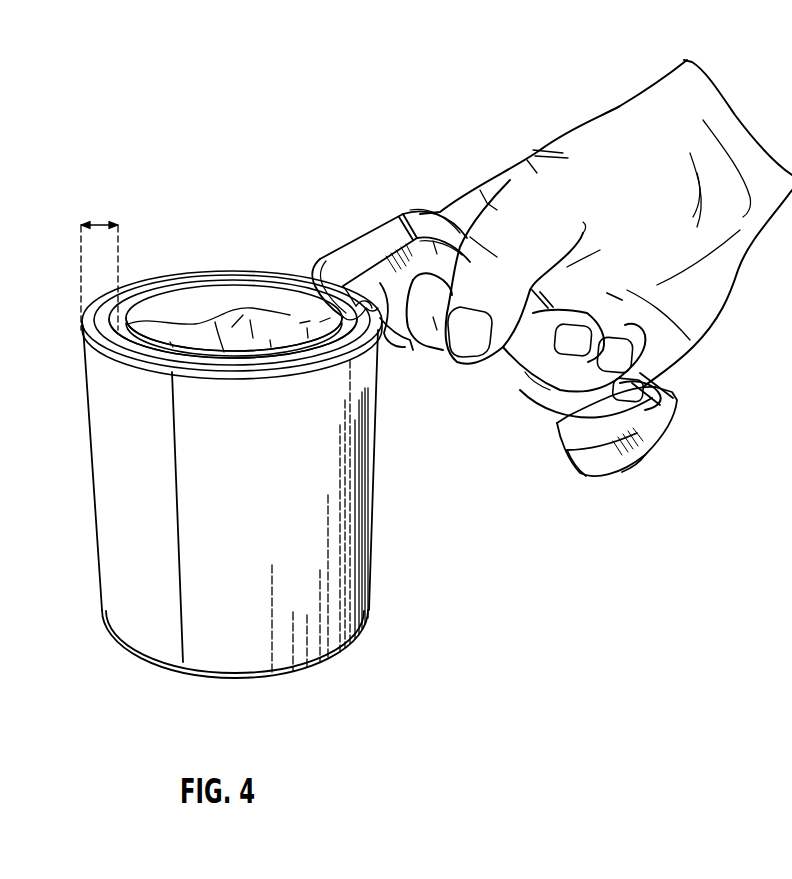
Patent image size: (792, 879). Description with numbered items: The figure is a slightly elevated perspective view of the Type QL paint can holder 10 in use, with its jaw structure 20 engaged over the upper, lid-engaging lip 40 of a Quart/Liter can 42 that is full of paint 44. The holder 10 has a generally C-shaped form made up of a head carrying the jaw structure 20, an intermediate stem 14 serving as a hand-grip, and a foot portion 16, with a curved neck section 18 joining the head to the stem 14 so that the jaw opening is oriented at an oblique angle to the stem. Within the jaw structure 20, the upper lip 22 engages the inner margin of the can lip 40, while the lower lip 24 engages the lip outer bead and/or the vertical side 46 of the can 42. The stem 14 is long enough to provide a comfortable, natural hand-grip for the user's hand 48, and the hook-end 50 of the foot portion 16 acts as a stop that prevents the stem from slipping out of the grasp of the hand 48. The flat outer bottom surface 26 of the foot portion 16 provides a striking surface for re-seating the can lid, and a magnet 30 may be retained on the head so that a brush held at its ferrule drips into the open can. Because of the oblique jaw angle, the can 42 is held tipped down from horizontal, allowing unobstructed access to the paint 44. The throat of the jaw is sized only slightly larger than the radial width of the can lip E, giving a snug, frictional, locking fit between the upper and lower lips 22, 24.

The paint can holder 10 is at (516, 421).
The stem 14 is at (547, 292).
The foot portion 16 is at (604, 492).
The curved neck section 18 is at (437, 251).
The jaw structure 20 is at (351, 295).
The upper lip 22 is at (327, 307).
The lower lip 24 is at (388, 333).
The outer bottom surface 26 is at (636, 461).
The magnet 30 is at (377, 243).
The lid-engaging lip 40 is at (194, 277).
The can 42 is at (114, 532).
The paint 44 is at (236, 340).
The vertical side 46 is at (372, 495).
The hand 48 is at (723, 273).
The hook-end 50 is at (598, 465).
The radial width of the can lip E is at (100, 222).